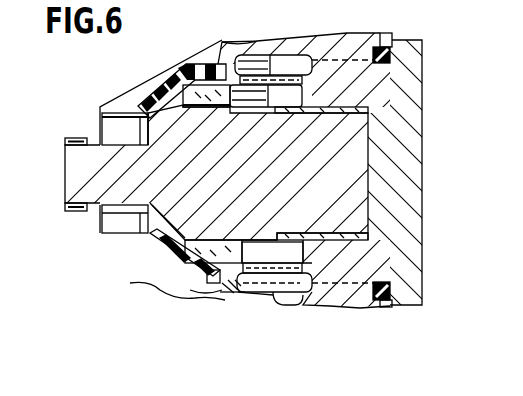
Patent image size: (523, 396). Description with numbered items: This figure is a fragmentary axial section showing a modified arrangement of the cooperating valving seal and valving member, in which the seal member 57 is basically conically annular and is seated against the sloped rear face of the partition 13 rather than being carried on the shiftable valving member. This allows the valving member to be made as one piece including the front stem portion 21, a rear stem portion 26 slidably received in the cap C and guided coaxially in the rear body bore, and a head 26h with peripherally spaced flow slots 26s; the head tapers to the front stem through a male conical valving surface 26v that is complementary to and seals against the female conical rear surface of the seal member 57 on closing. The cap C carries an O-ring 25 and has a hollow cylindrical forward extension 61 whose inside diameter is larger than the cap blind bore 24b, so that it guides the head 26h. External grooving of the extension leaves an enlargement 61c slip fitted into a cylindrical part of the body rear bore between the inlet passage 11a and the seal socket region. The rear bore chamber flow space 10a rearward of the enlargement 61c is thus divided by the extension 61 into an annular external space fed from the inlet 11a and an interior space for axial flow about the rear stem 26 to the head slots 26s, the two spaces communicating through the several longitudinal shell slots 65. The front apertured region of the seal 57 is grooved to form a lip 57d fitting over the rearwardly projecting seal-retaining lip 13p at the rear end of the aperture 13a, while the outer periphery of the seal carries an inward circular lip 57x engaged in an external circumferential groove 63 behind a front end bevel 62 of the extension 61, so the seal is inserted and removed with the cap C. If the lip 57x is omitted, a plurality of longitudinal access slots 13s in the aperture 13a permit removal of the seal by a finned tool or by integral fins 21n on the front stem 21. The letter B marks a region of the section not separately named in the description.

The rear bore chamber flow space 10a is at (271, 79).
The inlet passage 11a is at (290, 305).
The partition 13 is at (100, 107).
The seal-retaining circular lip 13p is at (125, 129).
The aperture 13a is at (125, 221).
The access slots 13s is at (103, 236).
The front stem portion 21 is at (97, 173).
The longitudinal integral fins 21n is at (86, 128).
The cap blind bore 24b is at (313, 110).
The O-ring 25 is at (386, 33).
The rear stem portion 26 is at (328, 157).
The male conical valving surface 26v is at (172, 117).
The head 26h is at (256, 238).
The flow slots 26s is at (233, 257).
The seal member 57 is at (147, 248).
The seal lip 57d is at (165, 227).
The inward circular lip 57x is at (232, 293).
The hollow cylindrical forward extension 61 is at (262, 295).
The enlargement 61c is at (260, 37).
The front end bevel 62 is at (150, 287).
The external circumferential groove 63 is at (212, 289).
The longitudinal shell slots 65 is at (262, 77).
The bearing region B is at (222, 38).
The cap C is at (408, 37).